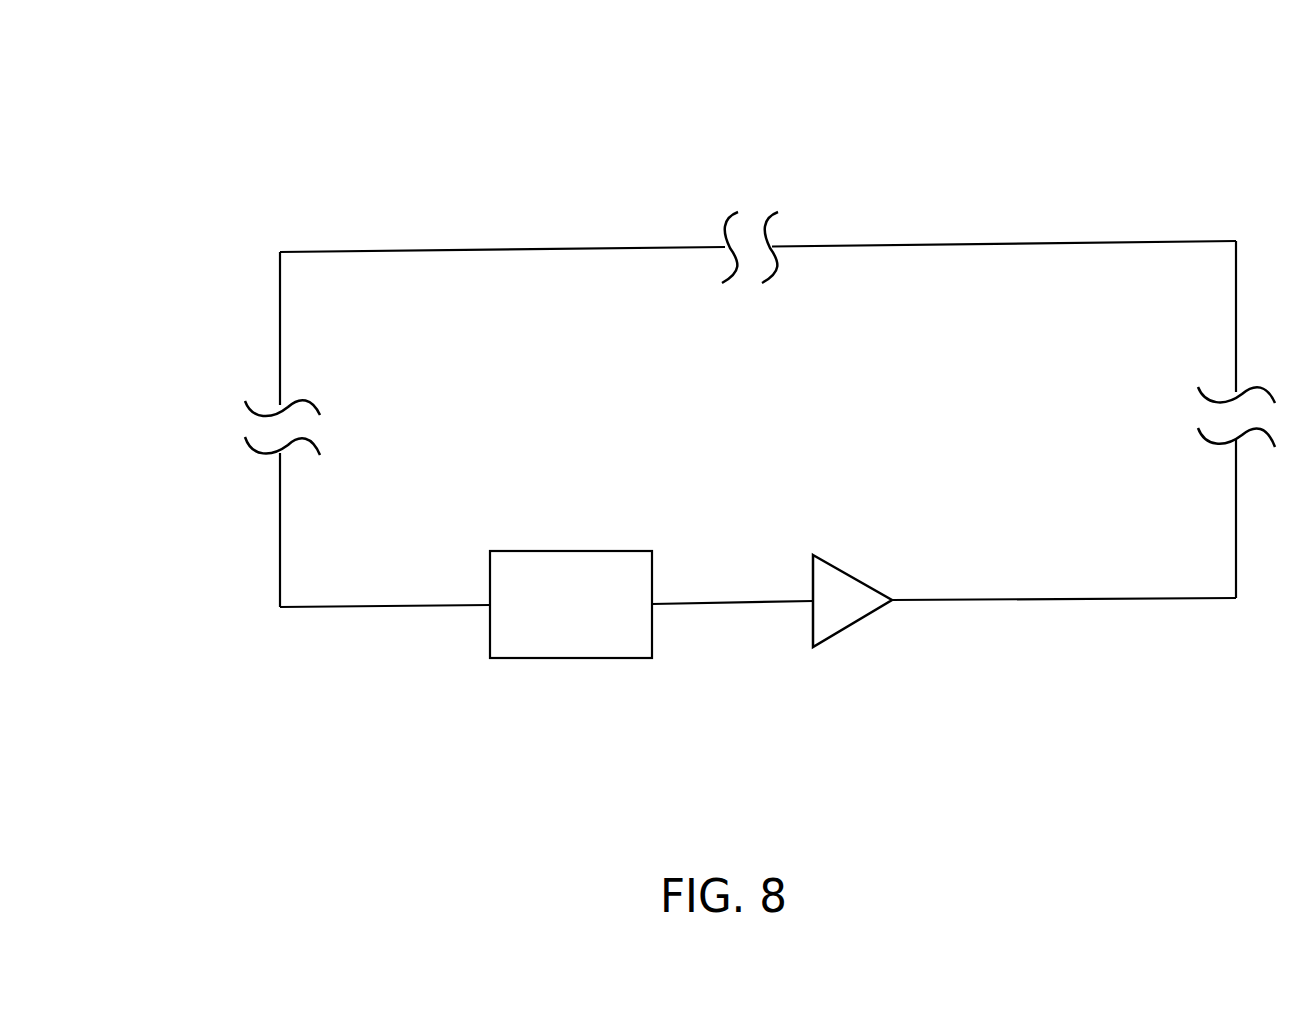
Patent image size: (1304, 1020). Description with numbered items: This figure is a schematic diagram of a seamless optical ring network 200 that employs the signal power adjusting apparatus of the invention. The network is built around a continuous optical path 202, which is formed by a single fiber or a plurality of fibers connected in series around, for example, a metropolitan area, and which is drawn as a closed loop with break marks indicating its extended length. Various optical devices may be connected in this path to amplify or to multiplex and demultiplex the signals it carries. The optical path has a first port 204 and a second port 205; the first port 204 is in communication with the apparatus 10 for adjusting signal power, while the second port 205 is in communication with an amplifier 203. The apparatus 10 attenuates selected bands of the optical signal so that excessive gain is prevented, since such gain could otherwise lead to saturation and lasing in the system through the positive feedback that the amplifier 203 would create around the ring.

The seamless optical ring network 200 is at (818, 98).
The continuous optical path 202 is at (863, 243).
The first port 204 is at (397, 606).
The apparatus for adjusting signal power 10 is at (572, 551).
The amplifier 203 is at (855, 573).
The second port 205 is at (1010, 598).